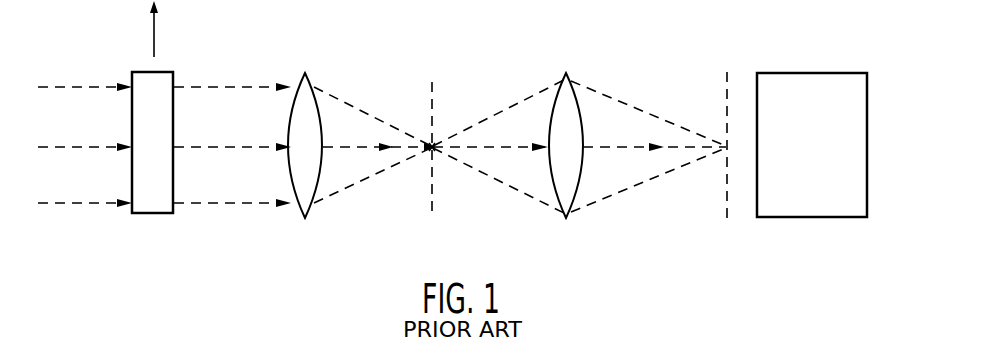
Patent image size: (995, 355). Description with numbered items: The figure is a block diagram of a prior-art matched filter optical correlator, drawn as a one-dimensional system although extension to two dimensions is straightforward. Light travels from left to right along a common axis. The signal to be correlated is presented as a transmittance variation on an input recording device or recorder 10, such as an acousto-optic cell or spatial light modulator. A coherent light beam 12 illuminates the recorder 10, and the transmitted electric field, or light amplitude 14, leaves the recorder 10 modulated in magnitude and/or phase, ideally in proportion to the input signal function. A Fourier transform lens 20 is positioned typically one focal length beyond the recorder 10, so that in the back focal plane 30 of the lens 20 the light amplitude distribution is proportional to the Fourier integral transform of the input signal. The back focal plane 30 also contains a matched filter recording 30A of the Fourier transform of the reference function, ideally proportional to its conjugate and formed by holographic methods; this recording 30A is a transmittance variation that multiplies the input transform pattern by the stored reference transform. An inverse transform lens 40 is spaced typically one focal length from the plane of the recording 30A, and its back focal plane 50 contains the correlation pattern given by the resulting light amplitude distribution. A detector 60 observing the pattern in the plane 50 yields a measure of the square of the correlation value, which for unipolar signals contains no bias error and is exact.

The recorder 10 is at (200, 240).
The coherent light beam 12 is at (85, 145).
The light amplitude 14 is at (232, 145).
The Fourier transform lens 20 is at (302, 83).
The back focal plane 30 is at (437, 85).
The matched filter recording 30A is at (420, 167).
The inverse transform lens 40 is at (567, 78).
The back focal plane 50 is at (725, 210).
The detector 60 is at (803, 207).